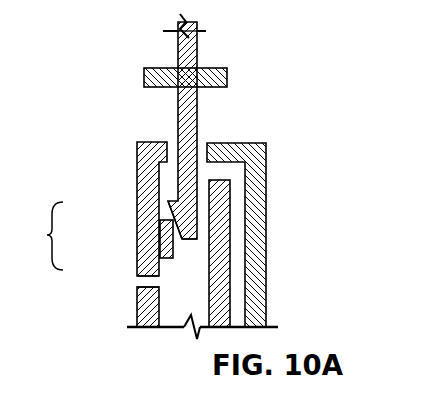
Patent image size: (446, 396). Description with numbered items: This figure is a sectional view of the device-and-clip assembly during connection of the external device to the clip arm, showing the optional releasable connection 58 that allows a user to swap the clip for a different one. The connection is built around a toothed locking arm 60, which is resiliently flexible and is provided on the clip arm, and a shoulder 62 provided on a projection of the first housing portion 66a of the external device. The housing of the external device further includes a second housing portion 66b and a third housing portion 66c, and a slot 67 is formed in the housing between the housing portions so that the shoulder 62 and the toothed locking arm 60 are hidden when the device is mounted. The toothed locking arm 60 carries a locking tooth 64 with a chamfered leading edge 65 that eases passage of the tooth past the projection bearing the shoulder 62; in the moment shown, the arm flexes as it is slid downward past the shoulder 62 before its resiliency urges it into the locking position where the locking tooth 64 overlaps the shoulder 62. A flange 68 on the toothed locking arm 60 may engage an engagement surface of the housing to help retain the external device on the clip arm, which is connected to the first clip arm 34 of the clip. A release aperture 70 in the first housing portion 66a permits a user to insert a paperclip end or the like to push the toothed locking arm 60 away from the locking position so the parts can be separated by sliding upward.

The first clip arm 34 is at (190, 55).
The releasable connection 58 is at (39, 236).
The toothed locking arm 60 is at (210, 128).
The shoulder 62 is at (166, 260).
The locking tooth 64 is at (172, 216).
The chamfered leading edge 65 is at (183, 241).
The first housing portion 66a is at (145, 161).
The second housing portion 66b is at (262, 197).
The third housing portion 66c is at (220, 240).
The slot 67 is at (167, 126).
The flange 68 is at (150, 77).
The release aperture 70 is at (140, 283).